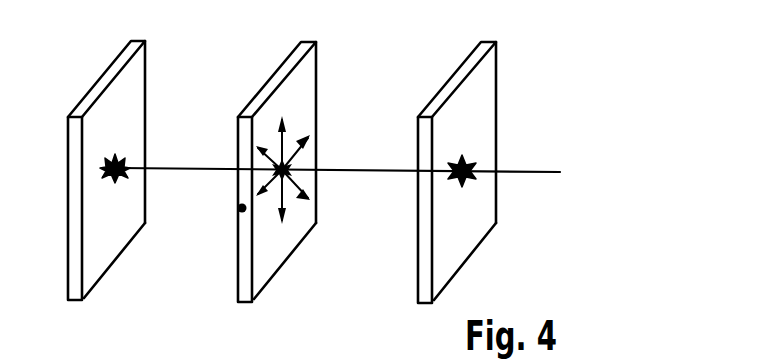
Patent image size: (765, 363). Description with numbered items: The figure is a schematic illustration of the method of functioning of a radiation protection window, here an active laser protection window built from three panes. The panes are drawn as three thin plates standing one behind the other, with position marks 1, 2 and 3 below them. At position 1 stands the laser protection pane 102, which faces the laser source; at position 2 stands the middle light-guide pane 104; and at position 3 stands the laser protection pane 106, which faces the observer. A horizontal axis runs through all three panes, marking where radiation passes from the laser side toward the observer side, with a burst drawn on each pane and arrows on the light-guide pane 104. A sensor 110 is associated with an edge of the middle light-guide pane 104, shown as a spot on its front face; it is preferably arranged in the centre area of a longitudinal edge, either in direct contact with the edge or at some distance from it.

The laser protection pane 102 is at (500, 176).
The light-guide pane 104 is at (317, 174).
The laser protection pane 106 is at (144, 173).
The sensor 110 is at (240, 209).
The position 1 is at (533, 115).
The position 2 is at (348, 112).
The position 3 is at (177, 112).